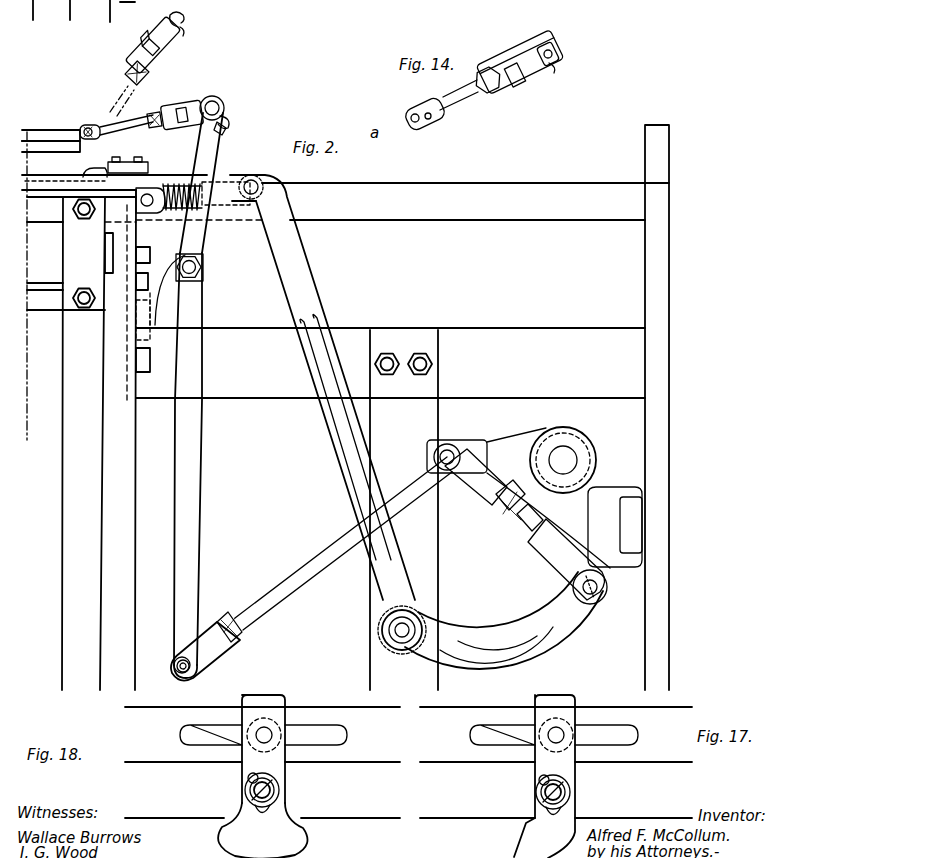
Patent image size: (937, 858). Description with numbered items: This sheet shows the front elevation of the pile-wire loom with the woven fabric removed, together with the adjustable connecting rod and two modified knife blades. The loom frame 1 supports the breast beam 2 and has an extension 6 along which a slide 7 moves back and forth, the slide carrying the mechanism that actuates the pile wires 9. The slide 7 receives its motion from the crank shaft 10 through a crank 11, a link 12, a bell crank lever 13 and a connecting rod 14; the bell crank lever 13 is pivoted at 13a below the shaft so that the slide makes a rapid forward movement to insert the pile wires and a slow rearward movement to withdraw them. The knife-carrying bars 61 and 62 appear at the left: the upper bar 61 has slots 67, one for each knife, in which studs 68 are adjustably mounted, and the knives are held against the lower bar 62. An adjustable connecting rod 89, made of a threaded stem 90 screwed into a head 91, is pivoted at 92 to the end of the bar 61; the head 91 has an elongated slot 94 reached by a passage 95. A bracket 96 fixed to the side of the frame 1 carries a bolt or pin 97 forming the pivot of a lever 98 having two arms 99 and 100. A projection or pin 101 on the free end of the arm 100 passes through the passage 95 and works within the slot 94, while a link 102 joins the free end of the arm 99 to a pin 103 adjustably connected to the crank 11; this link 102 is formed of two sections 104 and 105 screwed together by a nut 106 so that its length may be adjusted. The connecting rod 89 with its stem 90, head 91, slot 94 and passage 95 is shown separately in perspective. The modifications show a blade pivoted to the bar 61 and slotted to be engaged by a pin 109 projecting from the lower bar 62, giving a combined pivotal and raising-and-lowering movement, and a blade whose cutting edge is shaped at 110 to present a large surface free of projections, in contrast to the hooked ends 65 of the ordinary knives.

In FIG. 2A, the loom frame 1 is at (76, 375).
In FIG. 2A, the breast beam 2 is at (33, 197).
In FIG. 2A, the extension 6 is at (436, 207).
In FIG. 2A, the slide 7 is at (147, 171).
In FIG. 2A, the pile wires 9 is at (58, 182).
In FIG. 2A, the crank shaft 10 is at (563, 460).
In FIG. 2A, the crank 11 is at (564, 498).
In FIG. 2A, the link 12 is at (522, 512).
In FIG. 2A, the bell crank lever 13 is at (400, 590).
In FIG. 2A, the pivot of bell crank lever 13a is at (402, 645).
In FIG. 2A, the connecting rod 14 is at (252, 183).
In FIG. 2A, the bar 61 is at (37, 130).
In FIG. 18, the bar 61 is at (262, 734).
In FIG. 17, the bar 61 is at (556, 734).
In FIG. 2A, the bar 62 is at (42, 142).
In FIG. 18, the bar 62 is at (262, 800).
In FIG. 17, the bar 62 is at (556, 800).
In FIG. 17, the hooked ends 65 is at (516, 842).
In FIG. 18, the slots 67 is at (337, 738).
In FIG. 17, the slots 67 is at (478, 738).
In FIG. 18, the stud 68 is at (271, 731).
In FIG. 17, the stud 68 is at (566, 745).
In FIG. 2A, the connecting rod 89 is at (124, 126).
In FIG. 14, the connecting rod 89 is at (484, 92).
In FIG. 2A, the threaded stem 90 is at (128, 76).
In FIG. 14, the threaded stem 90 is at (456, 112).
In FIG. 2A, the head 91 is at (178, 103).
In FIG. 14, the head 91 is at (525, 75).
In FIG. 2A, the pivot 92 is at (89, 128).
In FIG. 2A, the elongated opening or slot 94 is at (181, 22).
In FIG. 14, the elongated opening or slot 94 is at (556, 48).
In FIG. 2A, the passage 95 is at (182, 33).
In FIG. 14, the passage 95 is at (554, 69).
In FIG. 2A, the bracket 96 is at (168, 285).
In FIG. 2A, the bolt or pin 97 is at (205, 268).
In FIG. 2A, the lever 98 is at (187, 374).
In FIG. 2A, the arm 99 is at (185, 486).
In FIG. 2A, the arm 100 is at (208, 152).
In FIG. 2A, the projection or pin 101 is at (226, 128).
In FIG. 2A, the link 102 is at (292, 588).
In FIG. 2A, the pin 103 is at (455, 449).
In FIG. 2A, the section 104 is at (215, 650).
In FIG. 2A, the section 105 is at (308, 567).
In FIG. 2A, the nut 106 is at (232, 618).
In FIG. 18, the pin 109 is at (281, 789).
In FIG. 17, the pin 109 is at (572, 790).
In FIG. 18, the cutting edge 110 is at (292, 833).